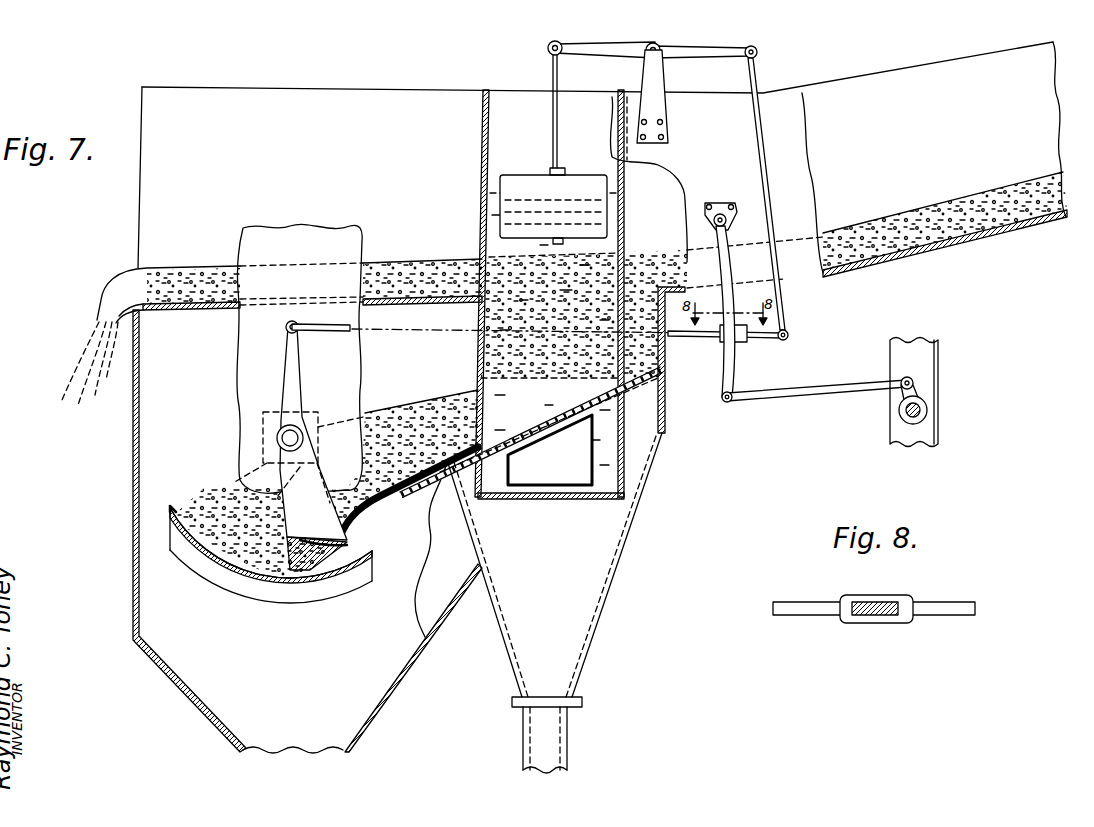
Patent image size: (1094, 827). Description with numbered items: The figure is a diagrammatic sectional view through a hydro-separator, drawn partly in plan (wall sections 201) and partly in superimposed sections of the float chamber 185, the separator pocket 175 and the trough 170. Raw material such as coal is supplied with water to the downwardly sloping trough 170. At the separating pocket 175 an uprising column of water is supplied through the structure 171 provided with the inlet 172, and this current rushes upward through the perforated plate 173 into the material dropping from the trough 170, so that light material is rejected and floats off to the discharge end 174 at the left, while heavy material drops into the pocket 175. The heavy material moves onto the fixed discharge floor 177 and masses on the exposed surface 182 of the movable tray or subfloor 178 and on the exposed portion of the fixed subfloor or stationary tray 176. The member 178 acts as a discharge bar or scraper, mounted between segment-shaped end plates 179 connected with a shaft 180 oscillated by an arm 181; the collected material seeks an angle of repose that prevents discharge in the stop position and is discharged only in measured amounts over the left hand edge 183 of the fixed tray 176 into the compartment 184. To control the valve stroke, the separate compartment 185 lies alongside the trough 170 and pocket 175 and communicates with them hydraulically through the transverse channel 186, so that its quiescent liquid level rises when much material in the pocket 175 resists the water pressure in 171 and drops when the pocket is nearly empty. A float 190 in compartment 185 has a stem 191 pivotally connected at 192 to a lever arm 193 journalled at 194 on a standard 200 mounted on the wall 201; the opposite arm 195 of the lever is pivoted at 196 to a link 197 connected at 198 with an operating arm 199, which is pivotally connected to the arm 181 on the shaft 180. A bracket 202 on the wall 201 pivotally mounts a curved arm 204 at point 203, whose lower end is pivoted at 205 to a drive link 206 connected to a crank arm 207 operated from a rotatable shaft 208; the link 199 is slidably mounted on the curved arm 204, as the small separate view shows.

In FIG. 7, the downwardly sloping trough 170 is at (1037, 123).
In FIG. 7, the pocket section structure 171 is at (630, 536).
In FIG. 7, the inlet 172 is at (566, 736).
In FIG. 7, the perforated plate 173 is at (643, 386).
In FIG. 7, the discharge end 174 is at (103, 302).
In FIG. 7, the separating pocket 175 is at (667, 357).
In FIG. 7, the fixed subfloor or stationary tray 176 is at (224, 567).
In FIG. 7, the fixed discharge floor 177 is at (374, 516).
In FIG. 7, the movable tray or subfloor 178 is at (298, 570).
In FIG. 7, the segment-shaped end plates 179 is at (273, 583).
In FIG. 7, the shaft 180 is at (284, 430).
In FIG. 7, the arm 181 is at (298, 372).
In FIG. 7, the exposed surface 182 is at (350, 546).
In FIG. 7, the left hand edge 183 is at (172, 514).
In FIG. 7, the compartment 184 is at (190, 665).
In FIG. 7, the float chamber 185 is at (496, 148).
In FIG. 7, the transverse channel 186 is at (560, 487).
In FIG. 7, the float 190 is at (524, 177).
In FIG. 7, the stem 191 is at (551, 69).
In FIG. 7, the pivot connection 192 is at (549, 43).
In FIG. 7, the lever arm 193 is at (609, 50).
In FIG. 7, the journal 194 is at (659, 45).
In FIG. 7, the opposite lever arm 195 is at (708, 48).
In FIG. 7, the pivot connection 196 is at (758, 52).
In FIG. 7, the link 197 is at (770, 126).
In FIG. 7, the pivot connection 198 is at (789, 337).
In FIG. 7, the operating arm 199 is at (355, 333).
In FIG. 8, the operating arm 199 is at (800, 613).
In FIG. 7, the standard 200 is at (668, 73).
In FIG. 7, the wall 201 is at (345, 243).
In FIG. 7, the bracket 202 is at (714, 203).
In FIG. 7, the pivot point 203 is at (725, 213).
In FIG. 7, the curved arm 204 is at (727, 276).
In FIG. 8, the curved arm 204 is at (880, 600).
In FIG. 7, the pivot connection 205 is at (727, 403).
In FIG. 7, the drive link 206 is at (825, 393).
In FIG. 7, the crank arm 207 is at (930, 388).
In FIG. 7, the rotatable shaft 208 is at (924, 418).